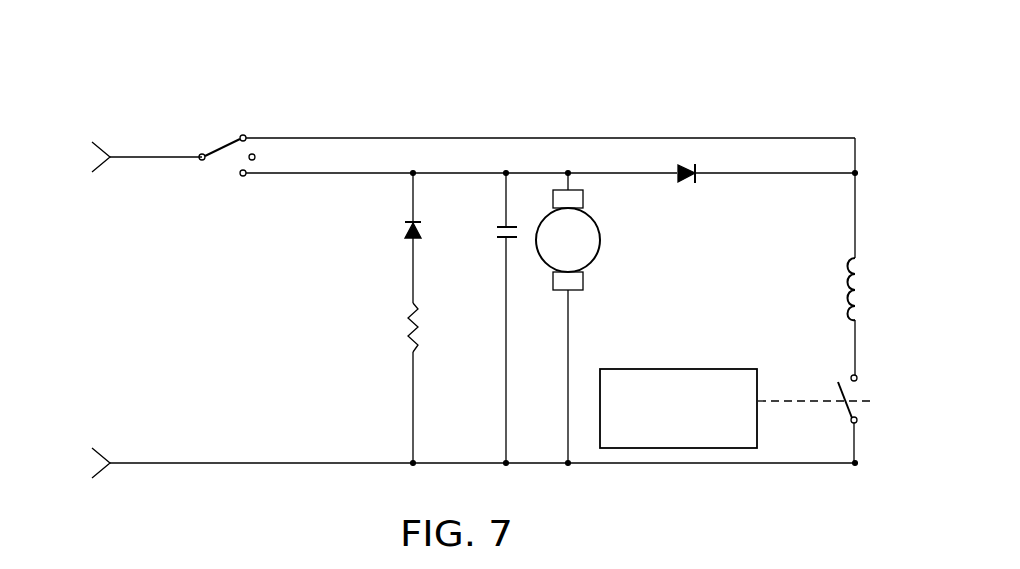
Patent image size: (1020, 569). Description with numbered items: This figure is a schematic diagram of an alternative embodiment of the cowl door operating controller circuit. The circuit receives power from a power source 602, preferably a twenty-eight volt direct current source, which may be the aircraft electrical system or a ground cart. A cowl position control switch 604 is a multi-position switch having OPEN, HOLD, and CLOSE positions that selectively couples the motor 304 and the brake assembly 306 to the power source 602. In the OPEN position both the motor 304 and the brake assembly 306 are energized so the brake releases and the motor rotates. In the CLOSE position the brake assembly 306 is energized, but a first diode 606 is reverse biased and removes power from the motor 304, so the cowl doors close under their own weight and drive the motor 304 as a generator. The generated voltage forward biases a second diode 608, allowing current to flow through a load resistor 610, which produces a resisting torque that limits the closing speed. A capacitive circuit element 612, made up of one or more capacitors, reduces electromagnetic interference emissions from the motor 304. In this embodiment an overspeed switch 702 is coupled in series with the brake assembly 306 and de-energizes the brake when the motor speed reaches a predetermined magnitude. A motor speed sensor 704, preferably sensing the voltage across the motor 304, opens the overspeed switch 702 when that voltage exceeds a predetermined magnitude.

The power source 602 is at (115, 256).
The cowl position control switch 604 is at (186, 171).
The first diode 606 is at (690, 184).
The second diode 608 is at (403, 228).
The load resistor 610 is at (408, 330).
The capacitive circuit element 612 is at (500, 241).
The motor 304 is at (598, 255).
The brake assembly 306 is at (848, 272).
The overspeed switch 702 is at (810, 374).
The motor speed sensor 704 is at (650, 369).